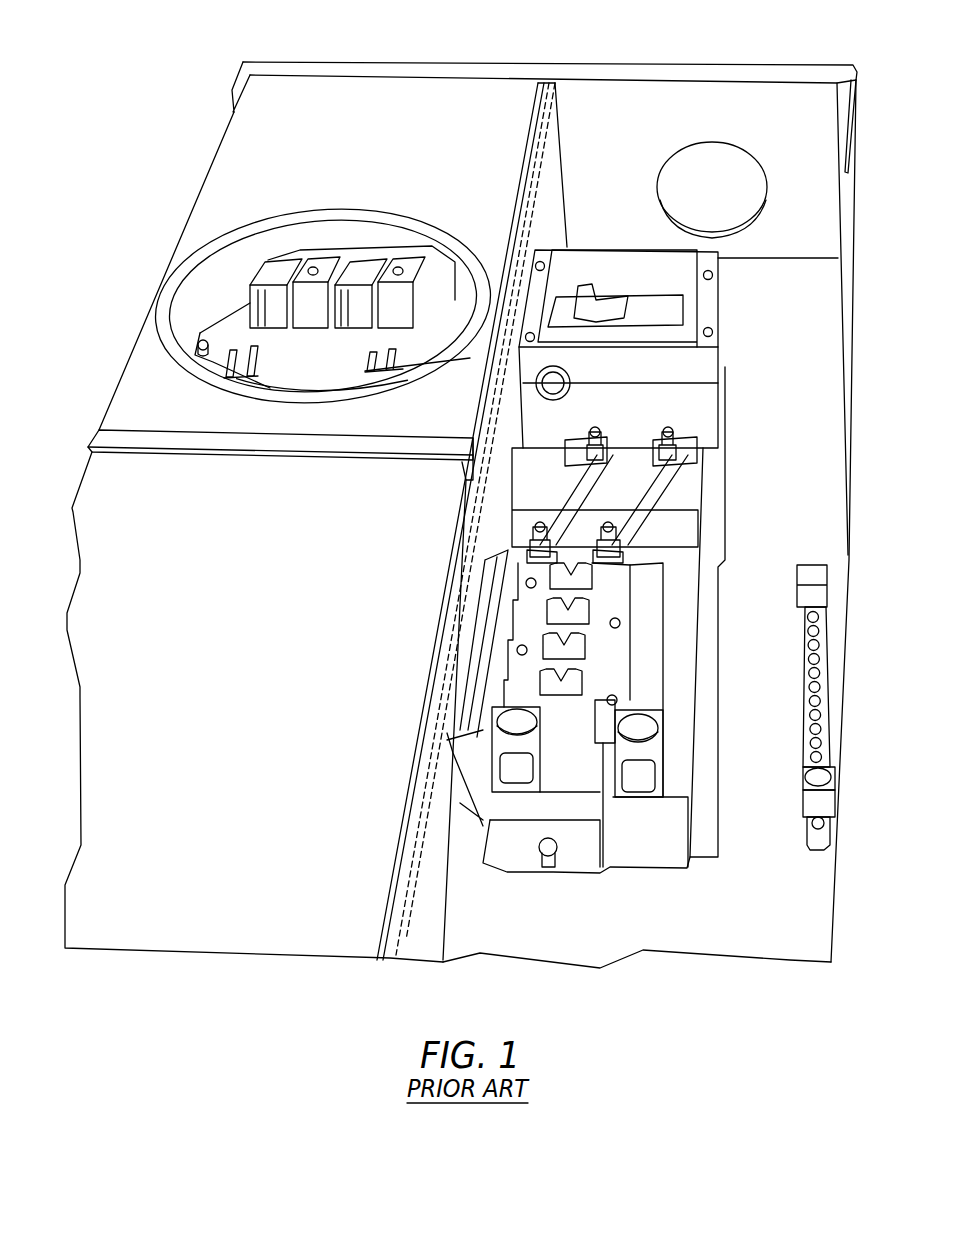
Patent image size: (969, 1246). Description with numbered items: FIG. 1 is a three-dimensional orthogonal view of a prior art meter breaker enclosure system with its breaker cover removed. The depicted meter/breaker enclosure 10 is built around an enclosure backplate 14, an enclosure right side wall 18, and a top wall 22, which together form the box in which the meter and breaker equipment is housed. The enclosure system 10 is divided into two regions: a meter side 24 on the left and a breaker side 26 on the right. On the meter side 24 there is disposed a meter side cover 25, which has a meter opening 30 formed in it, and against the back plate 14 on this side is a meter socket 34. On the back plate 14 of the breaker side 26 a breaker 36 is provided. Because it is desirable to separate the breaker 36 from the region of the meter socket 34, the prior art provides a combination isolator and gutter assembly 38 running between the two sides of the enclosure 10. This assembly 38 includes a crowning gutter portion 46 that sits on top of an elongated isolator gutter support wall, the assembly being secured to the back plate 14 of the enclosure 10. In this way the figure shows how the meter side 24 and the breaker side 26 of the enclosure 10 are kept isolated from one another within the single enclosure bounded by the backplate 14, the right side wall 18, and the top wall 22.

The meter/breaker enclosure 10 is at (877, 428).
The enclosure backplate 14 is at (762, 935).
The enclosure right side wall 18 is at (840, 285).
The top wall 22 is at (778, 100).
The meter side 24 is at (245, 935).
The meter side cover 25 is at (157, 933).
The breaker side 26 is at (632, 932).
The meter opening 30 is at (233, 267).
The meter socket 34 is at (317, 245).
The breaker 36 is at (710, 303).
The combination isolator and gutter assembly 38 is at (417, 947).
The crowning gutter portion 46 is at (390, 950).